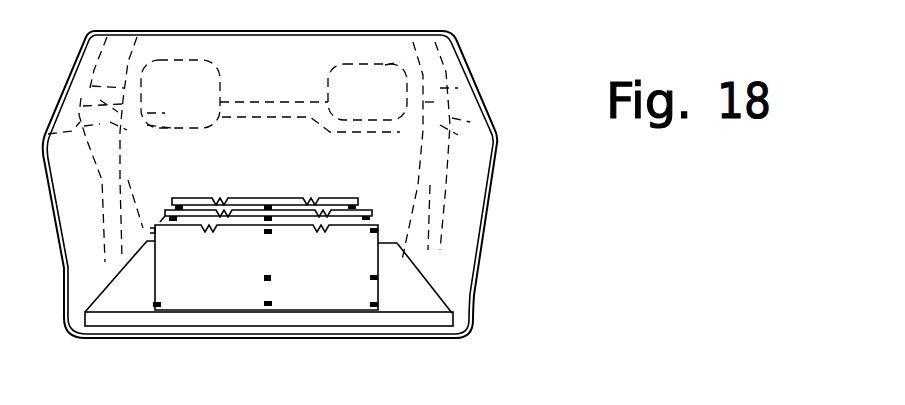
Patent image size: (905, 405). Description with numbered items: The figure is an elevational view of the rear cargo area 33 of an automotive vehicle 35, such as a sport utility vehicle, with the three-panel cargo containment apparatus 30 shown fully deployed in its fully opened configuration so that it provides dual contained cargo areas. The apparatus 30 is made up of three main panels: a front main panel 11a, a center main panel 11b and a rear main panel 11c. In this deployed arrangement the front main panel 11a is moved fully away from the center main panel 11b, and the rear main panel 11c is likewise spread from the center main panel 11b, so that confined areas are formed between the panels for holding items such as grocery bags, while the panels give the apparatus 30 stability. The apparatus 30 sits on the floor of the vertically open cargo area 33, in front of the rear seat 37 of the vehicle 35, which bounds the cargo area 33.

The front main panel 11a is at (378, 270).
The center main panel 11b is at (343, 218).
The rear main panel 11c is at (240, 198).
The three-panel cargo containment apparatus 30 is at (400, 288).
The cargo area 33 is at (380, 177).
The automotive vehicle 35 is at (487, 212).
The rear seat 37 is at (323, 109).